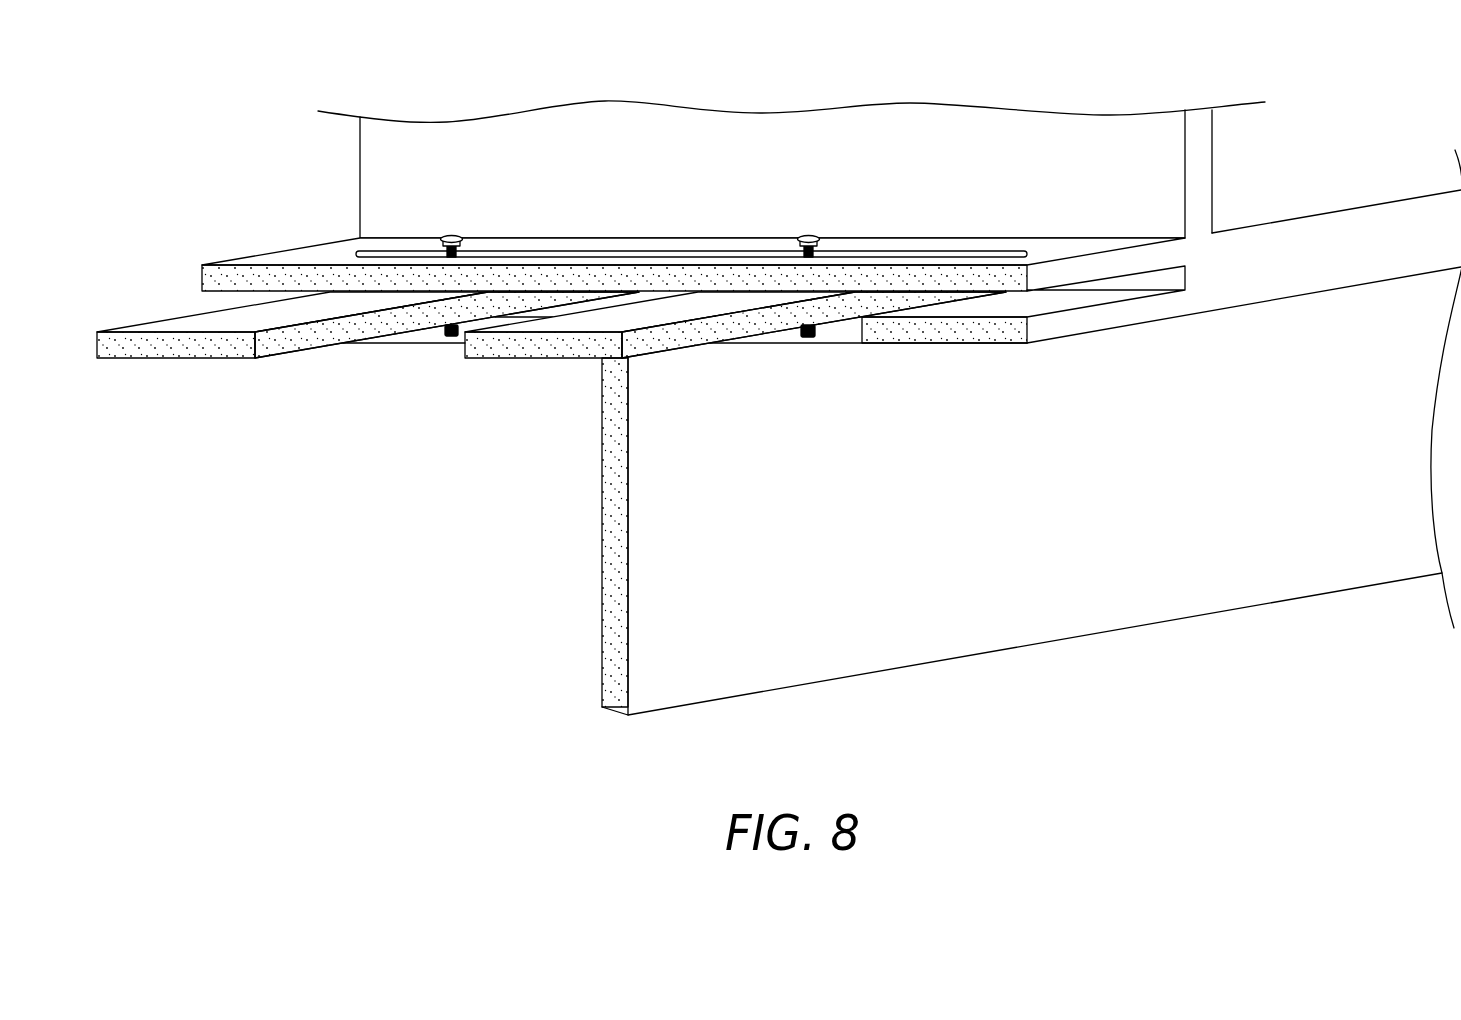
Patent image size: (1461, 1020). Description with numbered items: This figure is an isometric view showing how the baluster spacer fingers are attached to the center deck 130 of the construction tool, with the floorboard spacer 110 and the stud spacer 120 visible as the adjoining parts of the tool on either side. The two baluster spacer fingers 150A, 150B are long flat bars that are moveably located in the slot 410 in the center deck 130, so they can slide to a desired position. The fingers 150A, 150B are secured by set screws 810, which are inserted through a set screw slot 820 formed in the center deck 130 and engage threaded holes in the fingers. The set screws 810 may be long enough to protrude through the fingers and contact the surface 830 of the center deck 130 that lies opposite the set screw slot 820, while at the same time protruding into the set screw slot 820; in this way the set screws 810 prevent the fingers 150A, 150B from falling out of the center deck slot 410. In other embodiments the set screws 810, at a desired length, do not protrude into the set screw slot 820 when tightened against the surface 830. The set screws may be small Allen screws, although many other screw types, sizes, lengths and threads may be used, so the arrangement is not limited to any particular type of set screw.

The floorboard spacer 110 is at (833, 670).
The stud spacer 120 is at (360, 172).
The center deck 130 is at (1306, 304).
The slot 410 is at (1175, 279).
The baluster spacer finger 150A is at (162, 360).
The baluster spacer finger 150B is at (529, 360).
The set screw 810 is at (450, 338).
The set screw slot 820 is at (553, 257).
The surface 830 is at (1082, 302).